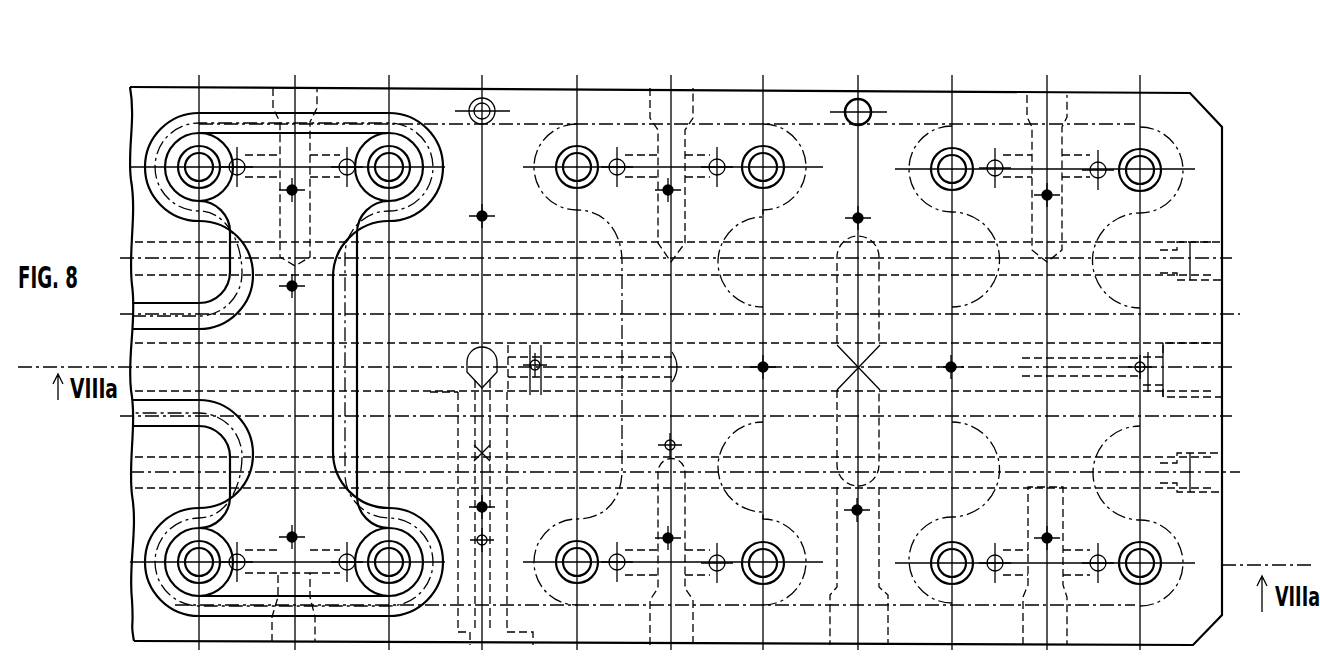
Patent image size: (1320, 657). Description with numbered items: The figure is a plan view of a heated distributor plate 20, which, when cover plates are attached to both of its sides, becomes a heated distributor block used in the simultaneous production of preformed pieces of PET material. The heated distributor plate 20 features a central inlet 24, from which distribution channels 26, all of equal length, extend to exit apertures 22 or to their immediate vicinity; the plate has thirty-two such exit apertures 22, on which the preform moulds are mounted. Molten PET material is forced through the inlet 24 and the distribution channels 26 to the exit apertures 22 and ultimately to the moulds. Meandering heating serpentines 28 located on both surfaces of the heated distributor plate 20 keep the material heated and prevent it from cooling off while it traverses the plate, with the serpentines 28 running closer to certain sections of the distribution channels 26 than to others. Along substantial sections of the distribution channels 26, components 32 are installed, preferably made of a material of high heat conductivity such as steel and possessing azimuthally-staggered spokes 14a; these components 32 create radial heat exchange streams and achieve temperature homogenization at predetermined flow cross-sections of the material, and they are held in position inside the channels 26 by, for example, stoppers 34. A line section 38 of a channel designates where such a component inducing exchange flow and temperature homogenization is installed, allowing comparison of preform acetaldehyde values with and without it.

The heating serpentines 28 is at (331, 118).
The heated distributor plate 20 is at (512, 105).
The azimuthally-staggered spokes 14a is at (537, 350).
The distribution channels 26 is at (652, 342).
The components 32 is at (577, 367).
The stoppers 34 is at (1208, 360).
The line section 38 is at (507, 495).
The central inlet 24 is at (497, 623).
The exit apertures 22 is at (1158, 548).